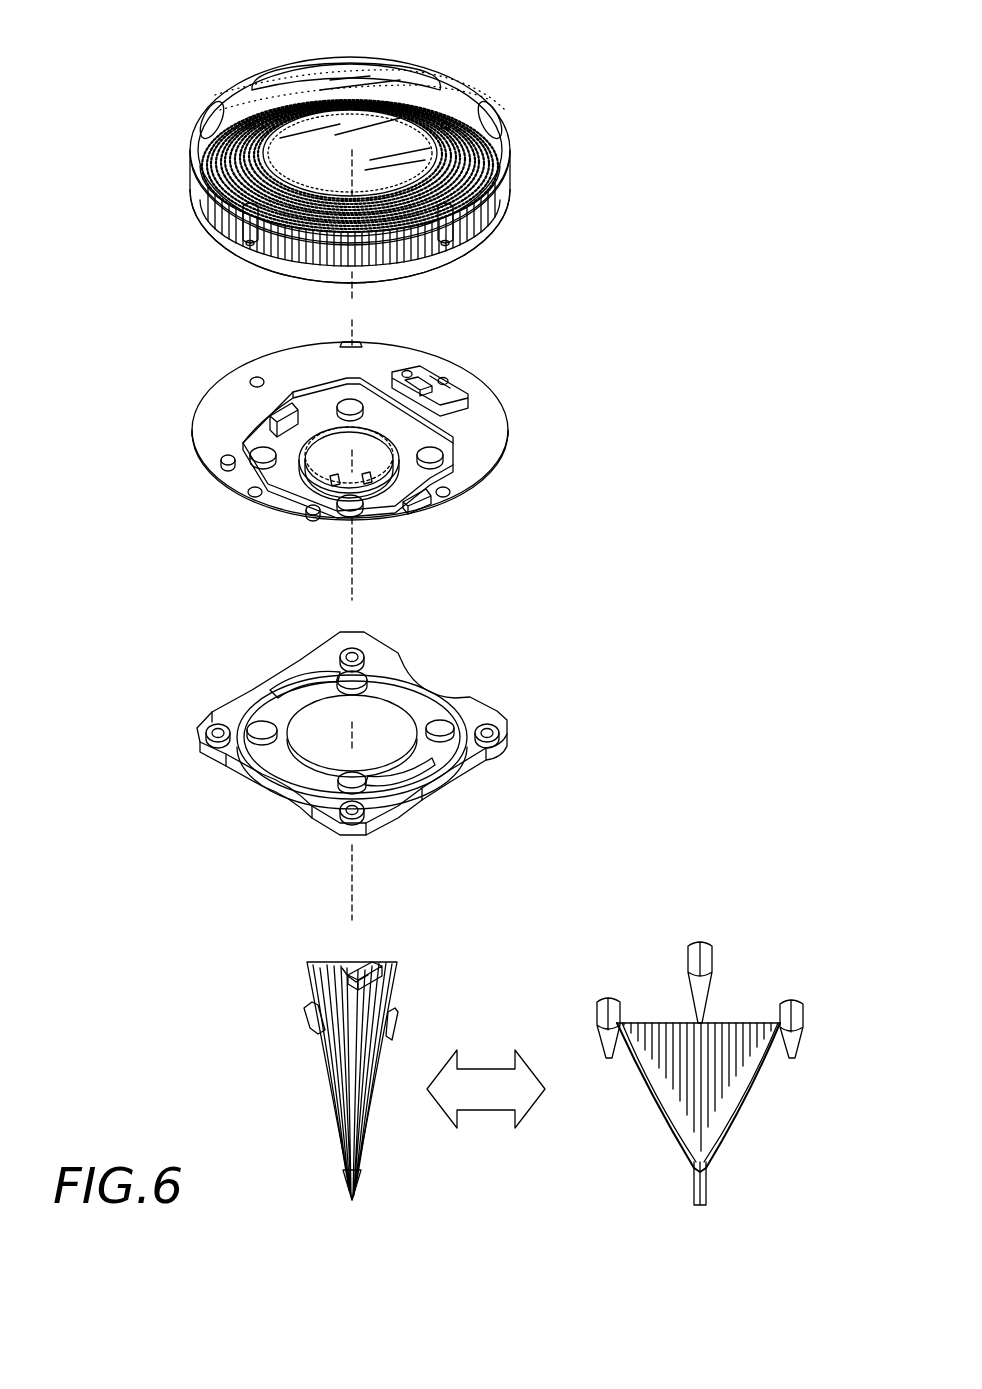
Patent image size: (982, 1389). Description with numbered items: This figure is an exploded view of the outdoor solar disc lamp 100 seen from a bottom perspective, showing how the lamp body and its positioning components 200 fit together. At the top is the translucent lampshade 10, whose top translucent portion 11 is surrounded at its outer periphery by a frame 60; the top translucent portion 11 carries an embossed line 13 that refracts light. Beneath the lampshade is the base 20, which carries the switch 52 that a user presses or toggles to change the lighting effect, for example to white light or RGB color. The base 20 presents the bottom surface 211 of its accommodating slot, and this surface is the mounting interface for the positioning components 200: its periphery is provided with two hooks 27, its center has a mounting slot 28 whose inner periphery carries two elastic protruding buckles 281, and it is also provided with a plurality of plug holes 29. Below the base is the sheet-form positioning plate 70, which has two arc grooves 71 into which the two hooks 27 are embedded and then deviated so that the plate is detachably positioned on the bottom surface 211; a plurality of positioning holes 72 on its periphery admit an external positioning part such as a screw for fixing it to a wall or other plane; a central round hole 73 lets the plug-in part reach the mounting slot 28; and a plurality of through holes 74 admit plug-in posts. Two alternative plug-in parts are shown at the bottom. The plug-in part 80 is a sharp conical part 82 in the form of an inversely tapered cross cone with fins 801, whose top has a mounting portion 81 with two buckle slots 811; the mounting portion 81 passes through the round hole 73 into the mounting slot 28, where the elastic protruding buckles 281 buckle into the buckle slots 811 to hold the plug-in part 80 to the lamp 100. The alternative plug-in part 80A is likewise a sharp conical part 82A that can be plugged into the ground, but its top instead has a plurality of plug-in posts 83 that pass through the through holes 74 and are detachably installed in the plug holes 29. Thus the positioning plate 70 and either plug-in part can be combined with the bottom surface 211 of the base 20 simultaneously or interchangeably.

The outdoor solar disc lamp 100 is at (160, 105).
The translucent lampshade 10 is at (306, 76).
The top translucent portion 11 is at (398, 132).
The frame 60 is at (458, 86).
The embossed line 13 is at (498, 188).
The base 20 is at (492, 452).
The bottom surface 211 is at (288, 470).
The hook 27 is at (298, 400).
The mounting slot 28 is at (380, 472).
The elastic protruding buckle 281 is at (343, 486).
The plug hole 29 is at (376, 408).
The switch 52 is at (466, 405).
The positioning component 200 is at (130, 718).
The positioning plate 70 is at (507, 696).
The arc groove 71 is at (274, 695).
The positioning hole 72 is at (330, 660).
The round hole 73 is at (312, 747).
The through hole 74 is at (384, 680).
The plug-in part 80 is at (296, 985).
The fin 801 is at (314, 992).
The mounting portion 81 is at (376, 966).
The buckle slot 811 is at (347, 972).
The sharp conical part 82 is at (368, 1150).
The plug-in part 80A is at (805, 972).
The plug-in post 83 is at (686, 956).
The sharp conical part 82A is at (708, 1180).